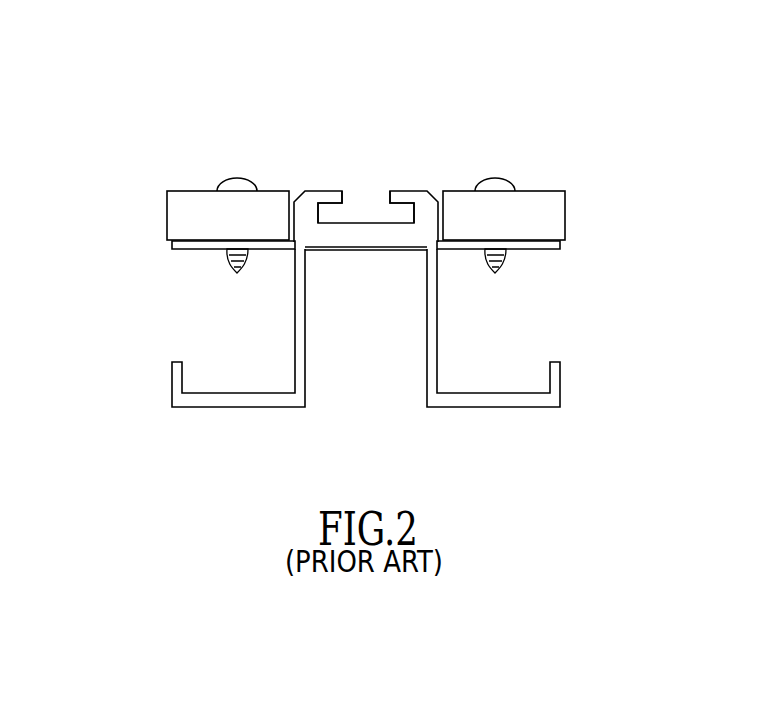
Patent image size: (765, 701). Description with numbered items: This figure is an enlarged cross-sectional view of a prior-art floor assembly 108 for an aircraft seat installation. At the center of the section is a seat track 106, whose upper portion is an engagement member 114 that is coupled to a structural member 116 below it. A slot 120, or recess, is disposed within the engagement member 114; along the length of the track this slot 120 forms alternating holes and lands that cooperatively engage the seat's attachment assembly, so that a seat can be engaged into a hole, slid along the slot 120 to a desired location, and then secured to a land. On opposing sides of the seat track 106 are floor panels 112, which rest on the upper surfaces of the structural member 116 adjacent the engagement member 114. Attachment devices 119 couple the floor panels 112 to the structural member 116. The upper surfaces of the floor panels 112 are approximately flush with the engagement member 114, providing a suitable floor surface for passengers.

The seat track 106 is at (407, 163).
The floor assembly 108 is at (307, 101).
The floor panel 112 is at (205, 192).
The engagement member 114 is at (335, 190).
The structural member 116 is at (170, 373).
The attachment device 119 is at (240, 177).
The slot 120 is at (361, 176).